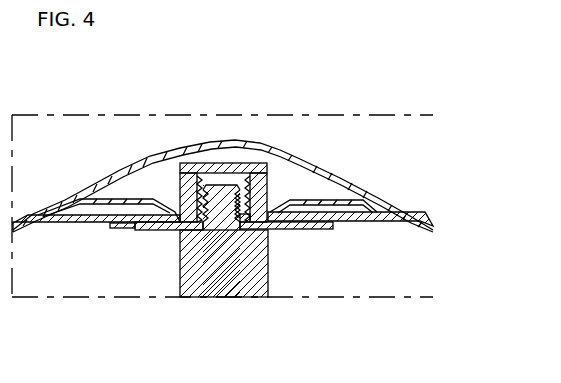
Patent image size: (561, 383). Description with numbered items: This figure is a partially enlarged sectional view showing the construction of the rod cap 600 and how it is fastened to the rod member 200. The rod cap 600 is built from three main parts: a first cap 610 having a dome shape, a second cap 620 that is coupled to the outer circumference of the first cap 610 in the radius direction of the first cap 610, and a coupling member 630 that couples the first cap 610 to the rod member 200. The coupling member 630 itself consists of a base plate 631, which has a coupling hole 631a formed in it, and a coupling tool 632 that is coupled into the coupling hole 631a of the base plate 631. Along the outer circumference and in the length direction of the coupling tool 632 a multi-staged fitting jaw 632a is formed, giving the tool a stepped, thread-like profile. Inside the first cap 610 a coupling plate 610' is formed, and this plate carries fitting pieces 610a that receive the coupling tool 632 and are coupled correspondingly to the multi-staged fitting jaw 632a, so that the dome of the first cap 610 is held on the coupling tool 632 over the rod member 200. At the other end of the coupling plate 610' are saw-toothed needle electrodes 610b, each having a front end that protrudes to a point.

The rod cap 600 is at (93, 163).
The rod member 200 is at (193, 266).
The first cap 610 is at (217, 145).
The coupling plate 610' is at (355, 140).
The fitting pieces 610a is at (290, 200).
The saw-toothed needle electrodes 610b is at (382, 204).
The second cap 620 is at (430, 220).
The coupling member 630 is at (188, 160).
The base plate 631 is at (310, 230).
The coupling hole 631a is at (266, 217).
The coupling tool 632 is at (254, 215).
The multi-staged fitting jaw 632a is at (277, 175).